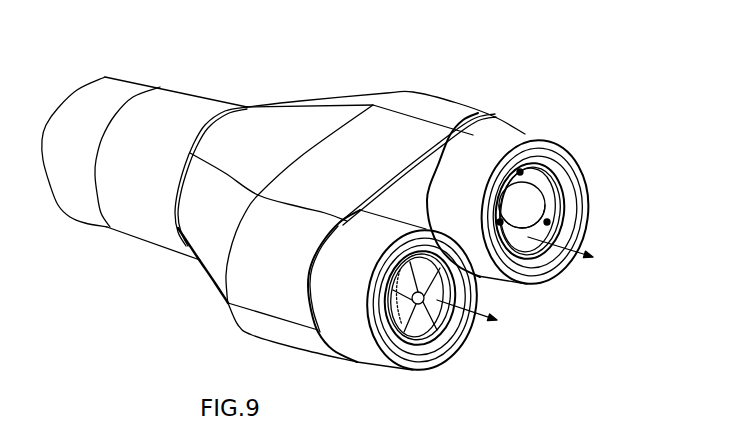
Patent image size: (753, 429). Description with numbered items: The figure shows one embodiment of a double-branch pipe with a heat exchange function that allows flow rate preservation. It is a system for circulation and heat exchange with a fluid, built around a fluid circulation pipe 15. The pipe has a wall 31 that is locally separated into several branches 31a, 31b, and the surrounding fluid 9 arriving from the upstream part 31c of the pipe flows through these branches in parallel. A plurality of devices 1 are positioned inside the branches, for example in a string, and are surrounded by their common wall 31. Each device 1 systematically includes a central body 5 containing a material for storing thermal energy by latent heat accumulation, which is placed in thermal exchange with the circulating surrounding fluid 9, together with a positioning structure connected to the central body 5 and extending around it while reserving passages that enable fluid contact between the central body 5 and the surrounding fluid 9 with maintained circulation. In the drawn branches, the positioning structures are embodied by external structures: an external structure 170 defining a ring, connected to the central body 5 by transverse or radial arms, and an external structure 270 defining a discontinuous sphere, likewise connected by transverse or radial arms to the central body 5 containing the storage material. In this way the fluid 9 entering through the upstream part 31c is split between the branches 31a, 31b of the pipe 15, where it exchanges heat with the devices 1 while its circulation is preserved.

The fluid circulation pipe 15 is at (229, 93).
The wall 31 is at (377, 240).
The branch 31a is at (402, 347).
The branch 31b is at (590, 182).
The upstream part 31c is at (105, 97).
The device 1 is at (560, 188).
The central body 5 is at (517, 207).
The surrounding fluid 9 is at (570, 257).
The external structure 170 is at (555, 207).
The external structure 270 is at (410, 330).